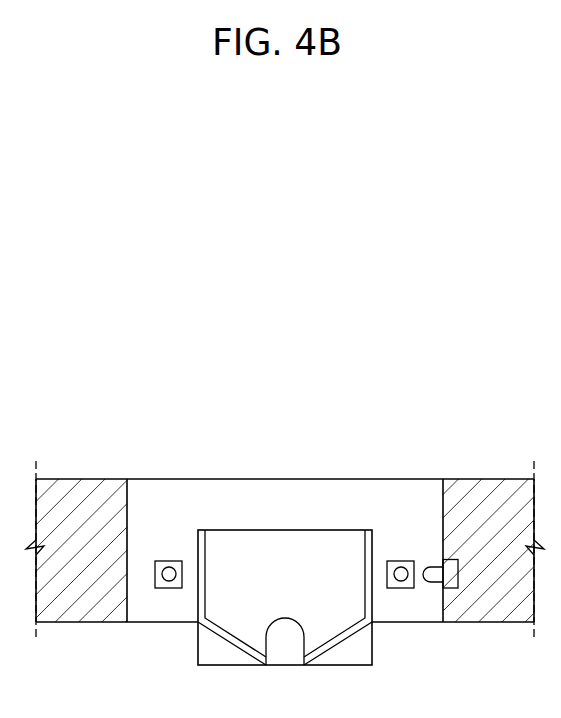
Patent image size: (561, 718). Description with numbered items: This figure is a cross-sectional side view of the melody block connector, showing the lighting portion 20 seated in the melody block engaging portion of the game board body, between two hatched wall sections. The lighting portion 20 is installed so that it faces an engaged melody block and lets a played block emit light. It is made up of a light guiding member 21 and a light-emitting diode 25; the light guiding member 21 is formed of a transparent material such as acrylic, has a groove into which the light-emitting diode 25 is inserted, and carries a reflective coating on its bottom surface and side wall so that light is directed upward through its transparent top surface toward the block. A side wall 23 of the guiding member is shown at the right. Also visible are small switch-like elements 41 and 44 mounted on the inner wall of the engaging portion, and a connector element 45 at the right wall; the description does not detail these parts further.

The lighting portion 20 is at (243, 437).
The light guiding member 21 is at (258, 552).
The second side wall 23 is at (368, 558).
The light-emitting diode 25 is at (286, 630).
The first fastener 41 is at (163, 582).
The second fastener 44 is at (400, 587).
The connector 45 is at (452, 588).